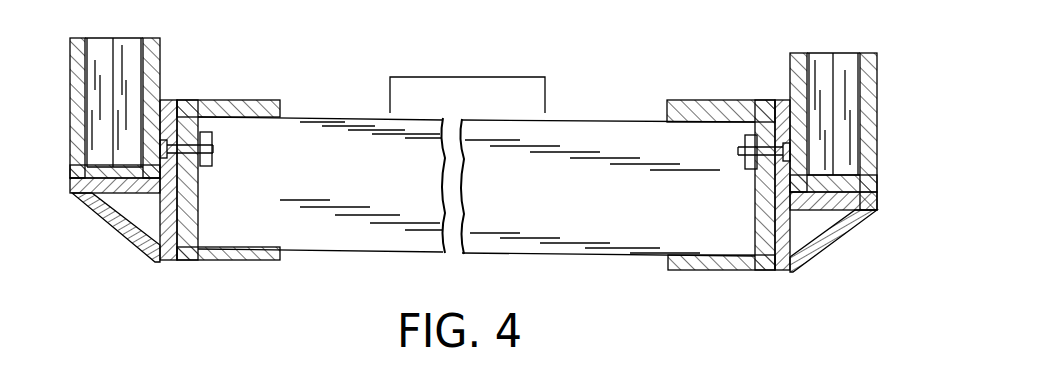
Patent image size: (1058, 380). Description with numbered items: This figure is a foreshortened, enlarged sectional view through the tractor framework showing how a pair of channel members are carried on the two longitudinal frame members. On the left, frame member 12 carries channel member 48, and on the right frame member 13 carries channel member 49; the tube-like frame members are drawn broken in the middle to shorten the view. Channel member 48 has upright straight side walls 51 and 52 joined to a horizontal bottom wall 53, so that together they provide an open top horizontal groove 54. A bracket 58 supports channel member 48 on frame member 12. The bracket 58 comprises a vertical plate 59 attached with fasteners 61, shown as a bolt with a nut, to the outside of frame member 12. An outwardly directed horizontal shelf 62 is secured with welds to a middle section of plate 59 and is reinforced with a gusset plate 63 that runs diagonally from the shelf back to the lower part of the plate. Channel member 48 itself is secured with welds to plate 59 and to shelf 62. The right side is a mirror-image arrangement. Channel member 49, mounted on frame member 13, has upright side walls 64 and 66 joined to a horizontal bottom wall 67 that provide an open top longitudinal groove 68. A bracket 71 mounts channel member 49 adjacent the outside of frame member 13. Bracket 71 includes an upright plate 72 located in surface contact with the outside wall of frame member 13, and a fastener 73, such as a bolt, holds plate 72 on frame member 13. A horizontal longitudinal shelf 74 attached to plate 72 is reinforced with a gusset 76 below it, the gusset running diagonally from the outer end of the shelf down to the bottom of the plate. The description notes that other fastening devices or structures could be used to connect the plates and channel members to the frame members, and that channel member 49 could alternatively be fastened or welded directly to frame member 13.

The frame member 12 is at (250, 100).
The frame member 13 is at (699, 108).
The channel member 48 is at (132, 93).
The channel member 49 is at (828, 105).
The side wall 51 is at (70, 68).
The side wall 52 is at (155, 72).
The bottom wall 53 is at (97, 165).
The groove 54 is at (103, 51).
The bracket 58 is at (139, 220).
The vertical plate 59 is at (165, 261).
The fasteners 61 is at (213, 150).
The horizontal shelf 62 is at (115, 215).
The gusset plate 63 is at (125, 232).
The side wall 64 is at (875, 95).
The side wall 66 is at (800, 88).
The bottom wall 67 is at (845, 178).
The groove 68 is at (822, 60).
The bracket 71 is at (847, 218).
The upright plate 72 is at (787, 267).
The fastener 73 is at (745, 155).
The diagonal brace 74 is at (855, 220).
The gusset 76 is at (810, 262).